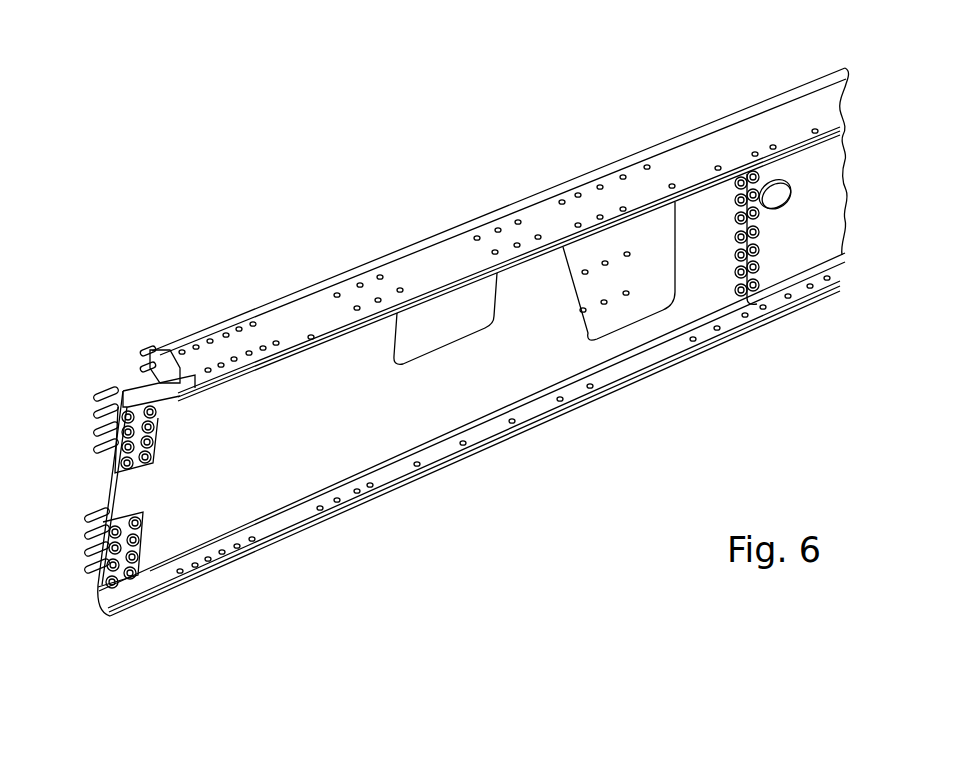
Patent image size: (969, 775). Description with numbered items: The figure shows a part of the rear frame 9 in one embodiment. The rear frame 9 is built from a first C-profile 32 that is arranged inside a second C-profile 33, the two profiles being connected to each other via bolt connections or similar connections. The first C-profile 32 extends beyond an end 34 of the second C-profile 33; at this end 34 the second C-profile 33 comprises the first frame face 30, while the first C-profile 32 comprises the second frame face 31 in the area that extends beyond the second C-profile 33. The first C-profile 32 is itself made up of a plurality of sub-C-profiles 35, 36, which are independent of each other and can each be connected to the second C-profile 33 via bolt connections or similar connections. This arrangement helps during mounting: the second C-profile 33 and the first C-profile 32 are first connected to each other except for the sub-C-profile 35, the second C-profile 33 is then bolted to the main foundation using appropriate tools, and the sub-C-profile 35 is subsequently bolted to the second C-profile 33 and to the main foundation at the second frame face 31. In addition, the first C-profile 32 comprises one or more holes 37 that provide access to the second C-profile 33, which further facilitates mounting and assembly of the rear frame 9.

The rear frame 9 is at (511, 190).
The first frame face 30 is at (168, 330).
The second frame face 31 is at (104, 479).
The first C-profile 32 is at (463, 393).
The second C-profile 33 is at (297, 312).
The end 34 is at (152, 350).
The sub-C-profile 35 is at (330, 430).
The sub-C-profile 36 is at (782, 247).
The holes 37 is at (467, 317).